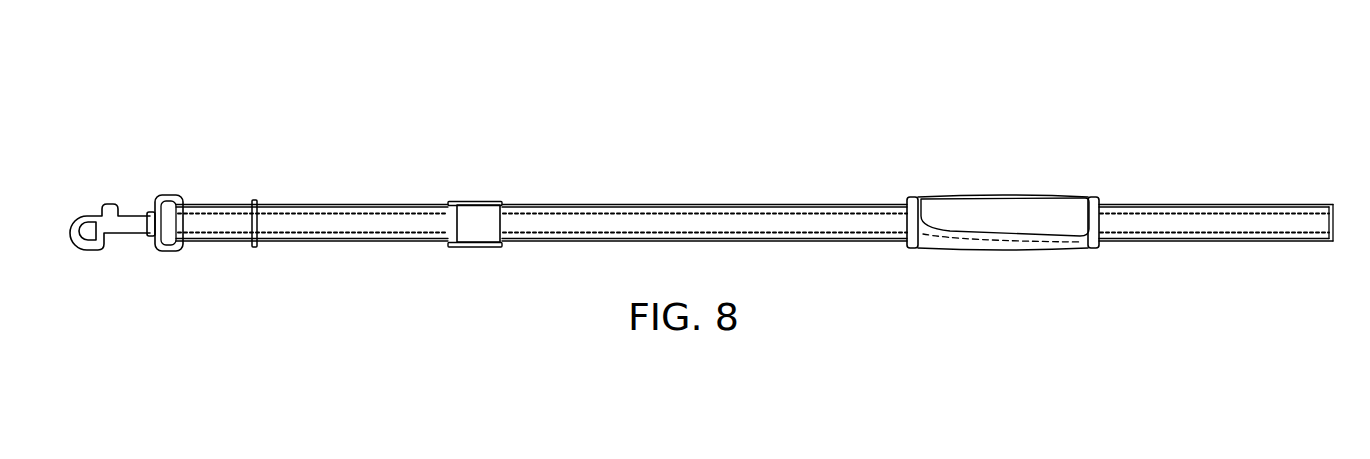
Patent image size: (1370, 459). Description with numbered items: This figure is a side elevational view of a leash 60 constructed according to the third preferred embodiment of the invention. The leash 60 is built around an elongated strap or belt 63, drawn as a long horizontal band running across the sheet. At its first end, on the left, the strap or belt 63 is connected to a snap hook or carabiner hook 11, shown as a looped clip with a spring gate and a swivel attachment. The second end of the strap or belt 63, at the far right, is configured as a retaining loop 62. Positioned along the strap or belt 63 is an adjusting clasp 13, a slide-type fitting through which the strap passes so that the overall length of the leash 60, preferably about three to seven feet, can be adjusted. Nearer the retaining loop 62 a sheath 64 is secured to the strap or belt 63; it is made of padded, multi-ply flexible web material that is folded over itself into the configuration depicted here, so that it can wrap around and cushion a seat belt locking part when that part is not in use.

The snap hook or carabiner hook 11 is at (93, 251).
The adjusting clasp 13 is at (470, 202).
The leash 60 is at (695, 143).
The retaining loop 62 is at (1230, 205).
The elongated strap or belt 63 is at (798, 205).
The sheath 64 is at (1005, 170).